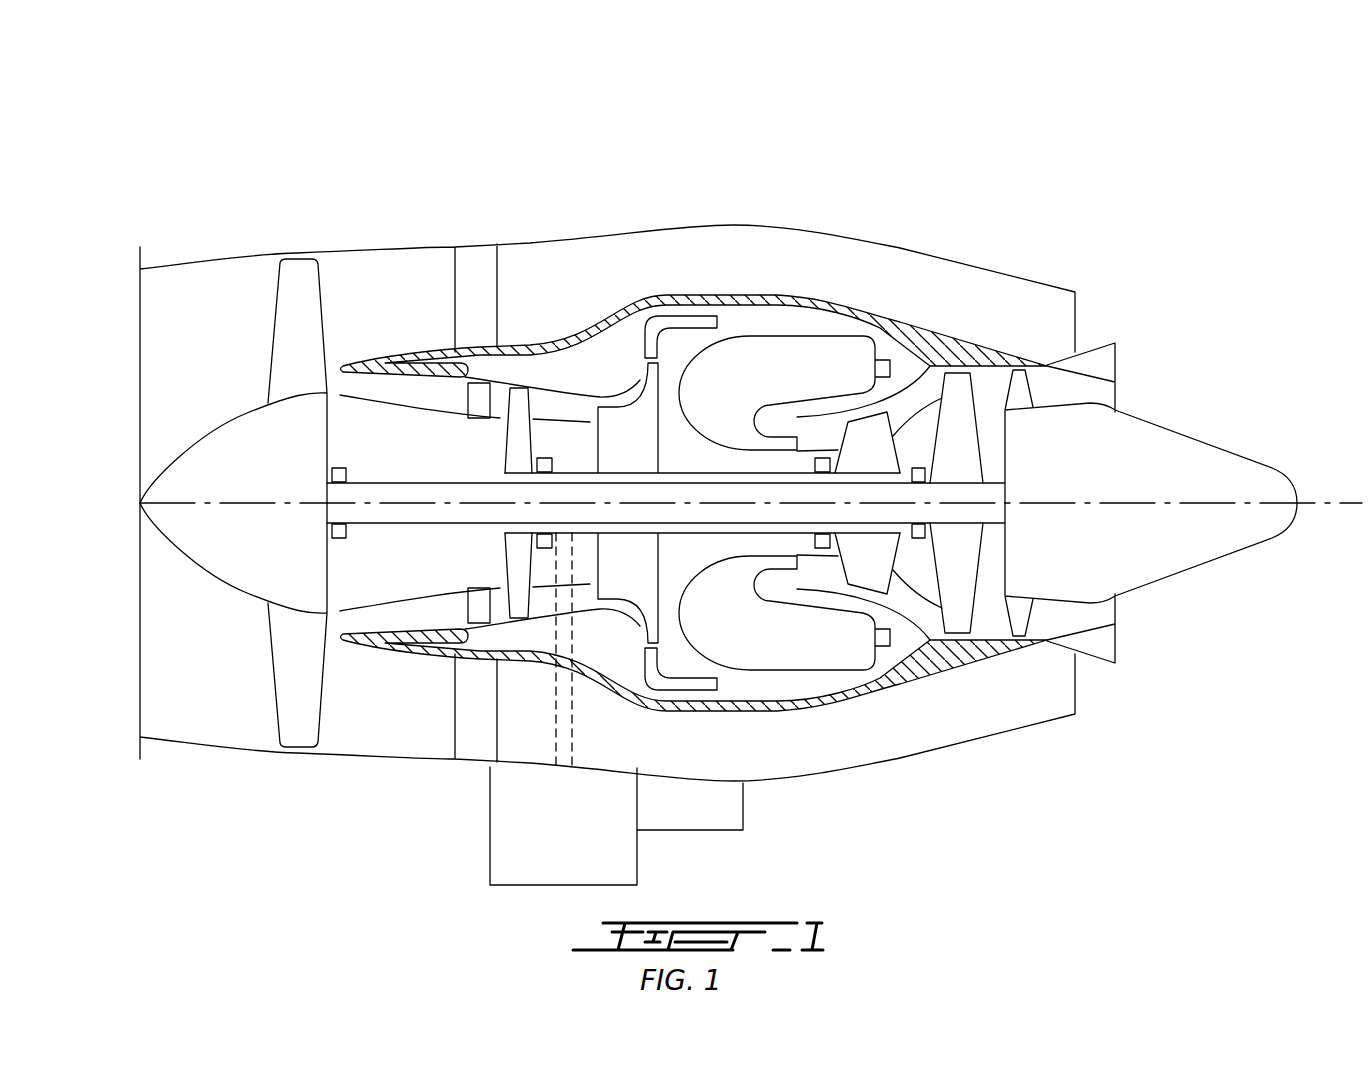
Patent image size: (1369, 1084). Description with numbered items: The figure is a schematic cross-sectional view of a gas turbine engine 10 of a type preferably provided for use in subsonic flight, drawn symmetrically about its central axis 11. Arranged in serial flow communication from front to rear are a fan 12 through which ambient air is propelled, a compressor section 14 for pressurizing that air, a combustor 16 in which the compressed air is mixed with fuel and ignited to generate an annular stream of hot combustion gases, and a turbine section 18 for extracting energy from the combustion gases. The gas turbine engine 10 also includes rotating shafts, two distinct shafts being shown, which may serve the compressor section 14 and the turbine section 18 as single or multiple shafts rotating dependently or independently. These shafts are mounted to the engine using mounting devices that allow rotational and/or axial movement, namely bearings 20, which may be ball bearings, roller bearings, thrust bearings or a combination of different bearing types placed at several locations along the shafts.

The gas turbine engine 10 is at (751, 464).
The central axis 11 is at (1337, 503).
The fan 12 is at (293, 662).
The compressor section 14 is at (553, 400).
The combustor 16 is at (780, 358).
The turbine section 18 is at (913, 572).
The bearings 20 is at (547, 543).